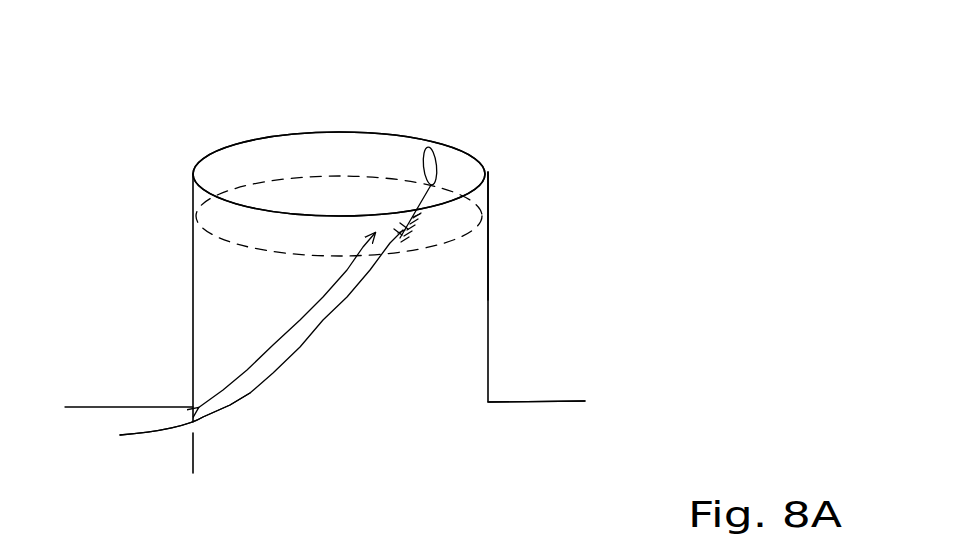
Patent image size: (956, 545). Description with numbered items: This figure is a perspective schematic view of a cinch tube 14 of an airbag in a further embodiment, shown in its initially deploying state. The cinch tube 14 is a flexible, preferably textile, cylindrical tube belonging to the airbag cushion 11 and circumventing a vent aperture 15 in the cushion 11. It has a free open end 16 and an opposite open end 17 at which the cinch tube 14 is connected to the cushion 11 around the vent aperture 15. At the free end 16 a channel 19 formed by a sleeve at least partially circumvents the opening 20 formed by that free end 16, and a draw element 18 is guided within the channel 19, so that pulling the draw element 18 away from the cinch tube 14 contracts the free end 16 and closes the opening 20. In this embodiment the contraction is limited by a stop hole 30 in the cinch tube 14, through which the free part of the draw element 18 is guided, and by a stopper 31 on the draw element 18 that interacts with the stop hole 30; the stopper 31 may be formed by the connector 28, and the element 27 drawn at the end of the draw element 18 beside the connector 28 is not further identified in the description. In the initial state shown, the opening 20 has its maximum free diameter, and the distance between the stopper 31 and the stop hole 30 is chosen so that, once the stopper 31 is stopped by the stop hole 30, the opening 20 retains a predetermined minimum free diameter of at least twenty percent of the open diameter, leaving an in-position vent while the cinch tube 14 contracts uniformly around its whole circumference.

The airbag cushion 11 is at (570, 403).
The cinch tube 14 is at (500, 268).
The vent aperture 15 is at (396, 419).
The free open end 16 is at (488, 171).
The opposite open end 17 is at (489, 402).
The draw element 18 is at (250, 392).
The channel 19 is at (285, 158).
The opening 20 is at (333, 195).
The float / sensor element 27 is at (437, 158).
The connector 28 is at (412, 237).
The stop hole 30 is at (188, 433).
The stopper 31 is at (397, 230).